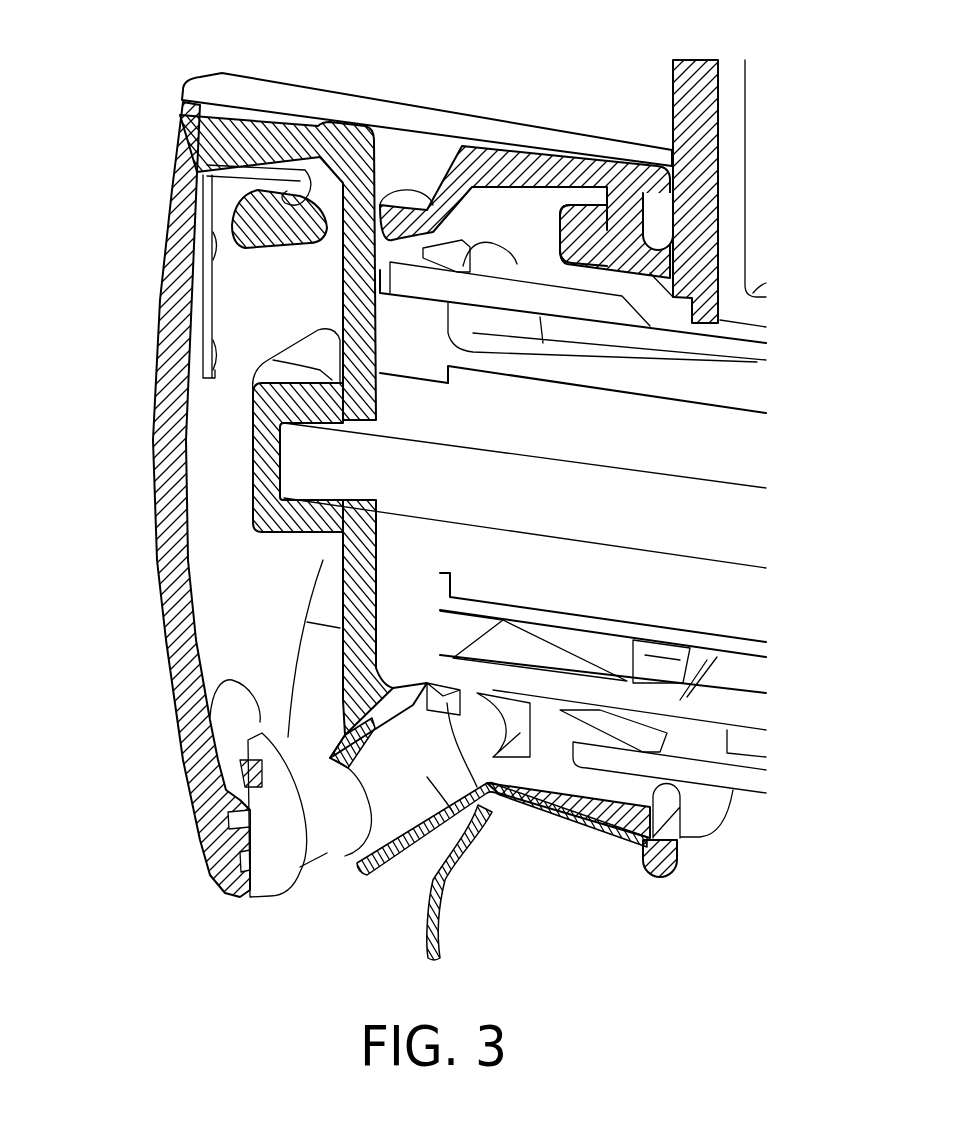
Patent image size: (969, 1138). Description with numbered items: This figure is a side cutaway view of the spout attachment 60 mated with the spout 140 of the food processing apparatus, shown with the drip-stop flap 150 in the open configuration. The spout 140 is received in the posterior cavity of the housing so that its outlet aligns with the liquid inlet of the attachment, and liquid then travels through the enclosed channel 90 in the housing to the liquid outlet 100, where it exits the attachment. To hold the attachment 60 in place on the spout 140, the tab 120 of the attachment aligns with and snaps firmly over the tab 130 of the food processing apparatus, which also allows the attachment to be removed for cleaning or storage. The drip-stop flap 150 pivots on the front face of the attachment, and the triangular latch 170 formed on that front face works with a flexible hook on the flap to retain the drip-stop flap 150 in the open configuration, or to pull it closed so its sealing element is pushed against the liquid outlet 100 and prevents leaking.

The spout attachment 60 is at (350, 107).
The enclosed channel 90 is at (477, 827).
The liquid outlet 100 is at (342, 785).
The tab 120 is at (620, 175).
The tab of food processing apparatus 130 is at (583, 223).
The spout 140 is at (557, 827).
The drip-stop flap 150 is at (183, 756).
The triangular latch 170 is at (273, 247).